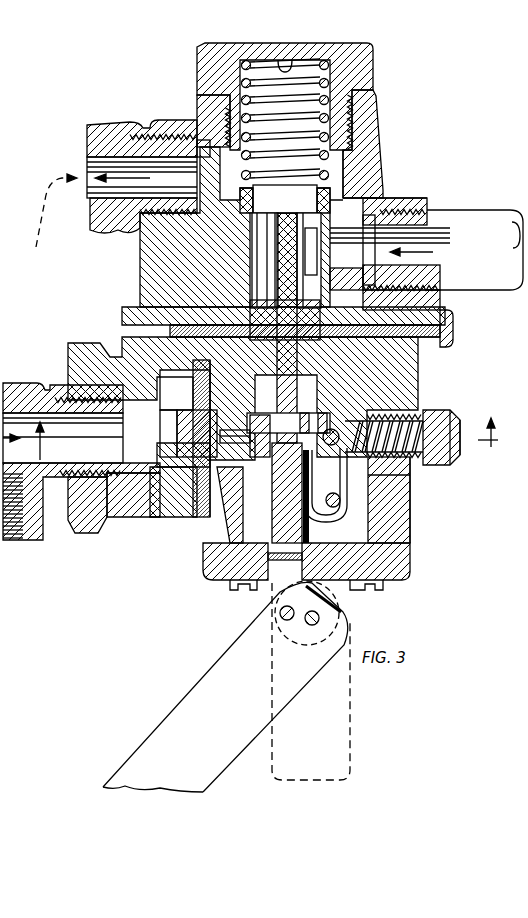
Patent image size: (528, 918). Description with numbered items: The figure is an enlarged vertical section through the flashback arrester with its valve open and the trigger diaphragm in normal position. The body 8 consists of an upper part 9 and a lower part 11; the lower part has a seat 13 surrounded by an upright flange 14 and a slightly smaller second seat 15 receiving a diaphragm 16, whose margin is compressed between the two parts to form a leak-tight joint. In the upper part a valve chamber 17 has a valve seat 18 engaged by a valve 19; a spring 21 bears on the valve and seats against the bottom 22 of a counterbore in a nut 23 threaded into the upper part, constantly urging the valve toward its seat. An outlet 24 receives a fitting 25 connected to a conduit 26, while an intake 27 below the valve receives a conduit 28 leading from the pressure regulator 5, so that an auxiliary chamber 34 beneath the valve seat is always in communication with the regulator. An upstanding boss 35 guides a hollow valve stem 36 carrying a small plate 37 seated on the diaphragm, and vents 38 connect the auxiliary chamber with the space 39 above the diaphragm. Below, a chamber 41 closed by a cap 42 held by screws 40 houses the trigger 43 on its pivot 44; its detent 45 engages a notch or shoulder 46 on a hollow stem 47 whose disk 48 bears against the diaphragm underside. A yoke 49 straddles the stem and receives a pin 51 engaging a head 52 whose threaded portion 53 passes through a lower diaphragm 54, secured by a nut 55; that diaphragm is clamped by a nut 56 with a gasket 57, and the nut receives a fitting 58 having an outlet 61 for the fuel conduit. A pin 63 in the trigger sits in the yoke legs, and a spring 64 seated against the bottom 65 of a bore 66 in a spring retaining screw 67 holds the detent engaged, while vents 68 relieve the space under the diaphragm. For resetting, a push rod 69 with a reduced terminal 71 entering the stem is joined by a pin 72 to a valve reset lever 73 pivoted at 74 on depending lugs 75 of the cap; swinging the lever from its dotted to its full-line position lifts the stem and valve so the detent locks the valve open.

The pressure regulator 5 is at (250, 443).
The body 8 is at (460, 323).
The upper part 9 is at (367, 140).
The lower part 11 is at (345, 494).
The seat 13 is at (432, 302).
The upright flange 14 is at (128, 314).
The second seat 15 is at (420, 352).
The diaphragm 16 is at (430, 337).
The valve chamber 17 is at (337, 163).
The valve seat 18 is at (380, 195).
The valve 19 is at (205, 216).
The spring 21 is at (332, 92).
The bottom 22 is at (286, 68).
The nut 23 is at (222, 60).
The outlet 24 is at (203, 147).
The fitting 25 is at (103, 125).
The conduit 26 is at (34, 247).
The intake 27 is at (412, 210).
The conduit 28 is at (496, 222).
The auxiliary chamber 34 is at (258, 263).
The upstanding boss 35 is at (270, 270).
The hollow valve stem 36 is at (318, 225).
The small plate 37 is at (276, 300).
The vents 38 is at (350, 282).
The space 39 is at (420, 287).
The bolts or screws 40 is at (383, 586).
The chamber 41 is at (362, 520).
The cap 42 is at (400, 557).
The trigger 43 is at (365, 518).
The pivot 44 is at (334, 508).
The detent 45 is at (313, 455).
The notch or shoulder 46 is at (312, 496).
The hollow stem 47 is at (360, 372).
The circular plate or disk 48 is at (335, 335).
The yoke 49 is at (177, 374).
The pin 51 is at (232, 462).
The head 52 is at (225, 470).
The threaded portion 53 is at (177, 447).
The diaphragm 54 is at (176, 505).
The nut 55 is at (136, 520).
The nut 56 is at (90, 528).
The gasket 57 is at (212, 500).
The fitting 58 is at (25, 388).
The outlet 61 is at (17, 530).
The pin 63 is at (338, 432).
The spring 64 is at (408, 461).
The bottom 65 is at (460, 418).
The bore 66 is at (443, 466).
The spring retaining screw or nut 67 is at (458, 466).
The vents 68 is at (340, 385).
The push rod 69 is at (233, 528).
The reduced terminal 71 is at (283, 462).
The pin 72 is at (282, 617).
The valve reset lever 73 is at (193, 700).
The pivot 74 is at (319, 619).
The depending lugs 75 is at (340, 600).